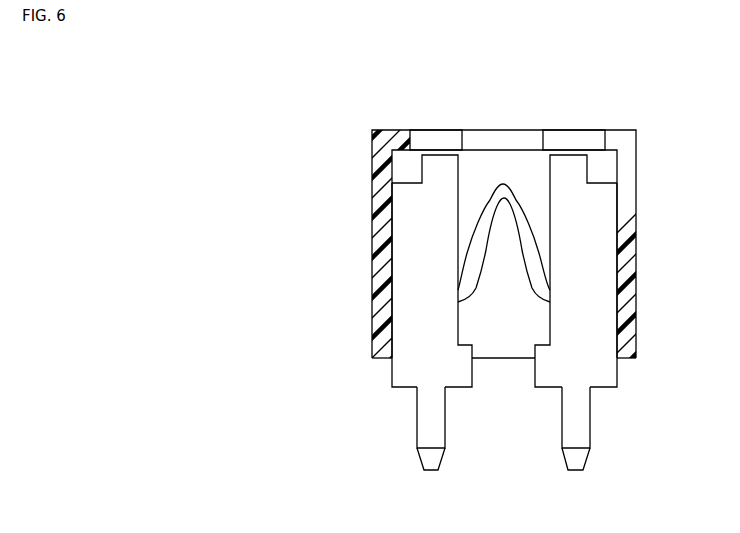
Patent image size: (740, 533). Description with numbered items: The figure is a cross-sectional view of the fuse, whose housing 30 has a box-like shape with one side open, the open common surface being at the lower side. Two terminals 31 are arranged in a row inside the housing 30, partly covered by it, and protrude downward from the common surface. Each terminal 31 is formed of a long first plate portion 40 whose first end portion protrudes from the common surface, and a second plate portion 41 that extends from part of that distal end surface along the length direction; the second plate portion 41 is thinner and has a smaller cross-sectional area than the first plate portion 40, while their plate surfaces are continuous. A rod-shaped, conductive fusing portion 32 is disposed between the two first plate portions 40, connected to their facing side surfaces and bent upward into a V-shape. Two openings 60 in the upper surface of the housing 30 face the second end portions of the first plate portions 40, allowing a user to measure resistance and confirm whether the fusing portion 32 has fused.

The housing 30 is at (634, 170).
The terminal 31 is at (382, 459).
The fusing portion 32 is at (499, 192).
The first plate portion 40 is at (397, 318).
The second plate portion 41 is at (418, 403).
The opening 60 is at (430, 132).